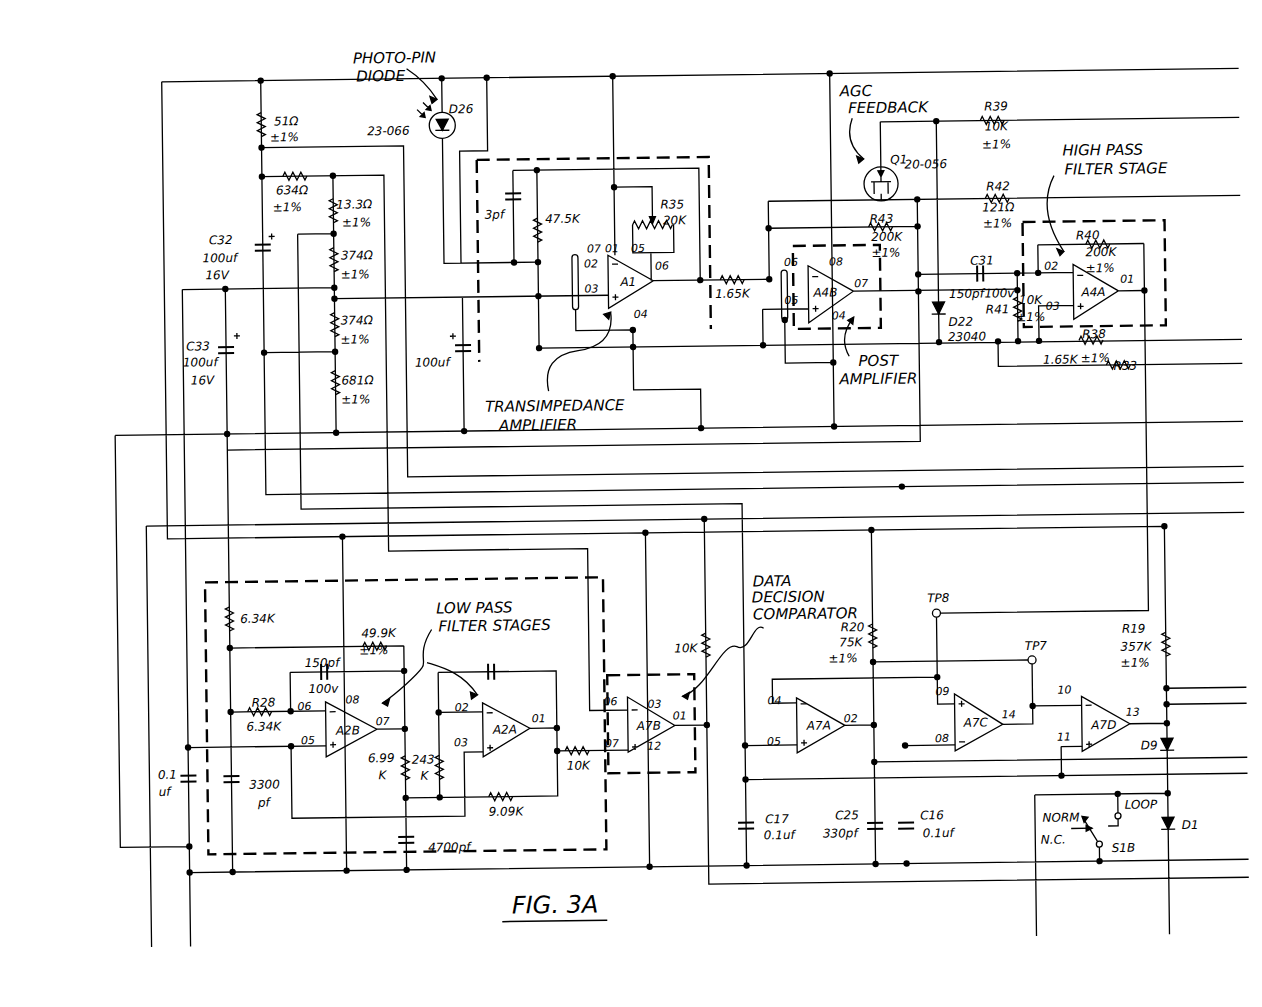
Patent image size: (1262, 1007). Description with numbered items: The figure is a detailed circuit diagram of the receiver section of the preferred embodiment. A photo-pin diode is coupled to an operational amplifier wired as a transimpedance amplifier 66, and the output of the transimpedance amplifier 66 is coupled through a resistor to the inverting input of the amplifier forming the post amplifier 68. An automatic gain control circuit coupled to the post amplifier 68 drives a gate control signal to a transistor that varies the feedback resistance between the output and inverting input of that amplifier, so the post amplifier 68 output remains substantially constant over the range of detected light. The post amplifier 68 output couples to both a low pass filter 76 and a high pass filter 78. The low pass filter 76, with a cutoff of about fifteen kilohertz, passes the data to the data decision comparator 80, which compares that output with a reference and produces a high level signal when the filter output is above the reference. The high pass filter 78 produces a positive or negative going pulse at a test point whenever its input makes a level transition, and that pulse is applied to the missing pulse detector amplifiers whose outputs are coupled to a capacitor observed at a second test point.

The transimpedance amplifier 66 is at (692, 145).
The post amplifier 68 is at (814, 342).
The low pass filter 76 is at (602, 829).
The high pass filter 78 is at (1149, 226).
The data decision comparator 80 is at (660, 774).